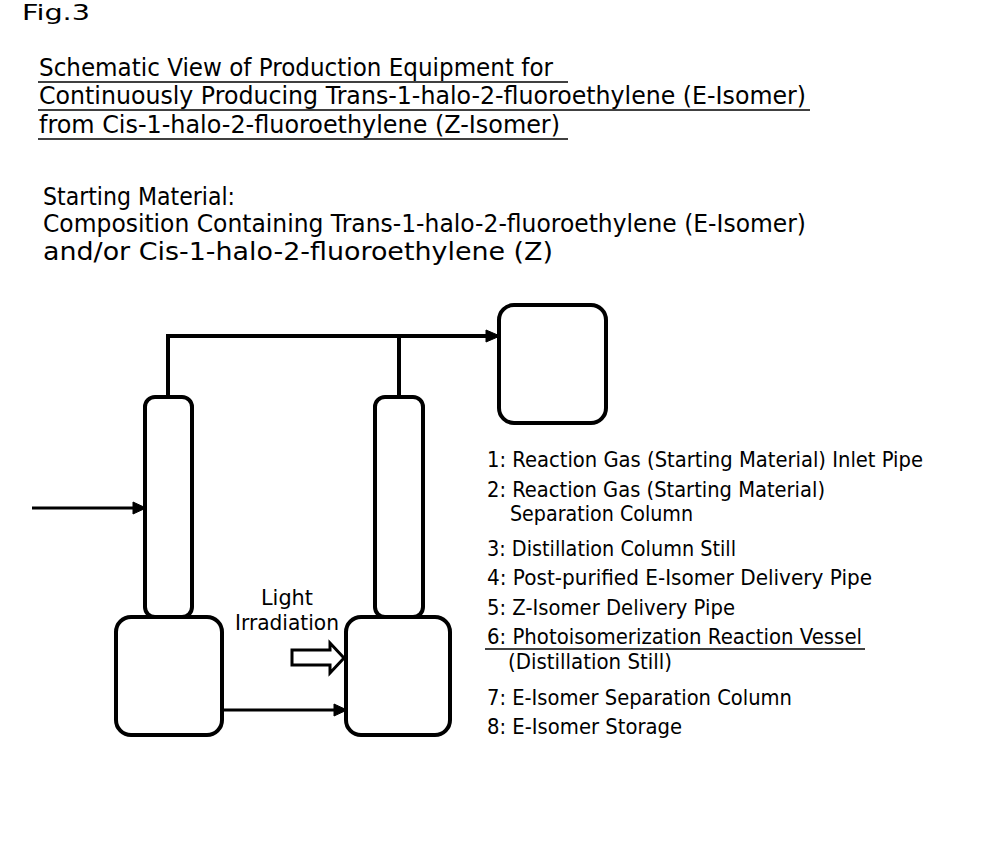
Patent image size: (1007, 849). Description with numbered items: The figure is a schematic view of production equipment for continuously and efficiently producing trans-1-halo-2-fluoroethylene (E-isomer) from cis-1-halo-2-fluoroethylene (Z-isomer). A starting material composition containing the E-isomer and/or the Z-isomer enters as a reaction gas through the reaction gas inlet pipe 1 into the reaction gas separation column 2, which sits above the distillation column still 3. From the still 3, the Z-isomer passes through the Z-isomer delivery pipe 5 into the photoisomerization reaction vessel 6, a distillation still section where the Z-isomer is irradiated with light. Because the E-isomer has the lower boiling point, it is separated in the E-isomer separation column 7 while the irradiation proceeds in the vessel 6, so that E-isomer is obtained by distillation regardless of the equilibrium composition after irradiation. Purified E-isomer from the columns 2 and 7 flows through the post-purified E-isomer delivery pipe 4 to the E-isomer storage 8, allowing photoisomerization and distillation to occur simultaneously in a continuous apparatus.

The reaction gas inlet pipe 1 is at (89, 493).
The reaction gas separation column 2 is at (168, 507).
The distillation column still 3 is at (169, 676).
The post-purified E-isomer delivery pipe 4 is at (334, 346).
The Z-isomer delivery pipe 5 is at (284, 689).
The photoisomerization reaction vessel 6 is at (398, 676).
The E-isomer separation column 7 is at (399, 507).
The E-isomer storage 8 is at (552, 364).